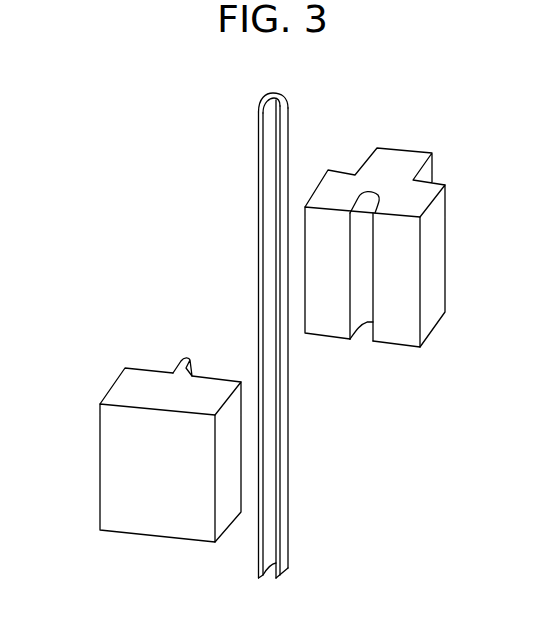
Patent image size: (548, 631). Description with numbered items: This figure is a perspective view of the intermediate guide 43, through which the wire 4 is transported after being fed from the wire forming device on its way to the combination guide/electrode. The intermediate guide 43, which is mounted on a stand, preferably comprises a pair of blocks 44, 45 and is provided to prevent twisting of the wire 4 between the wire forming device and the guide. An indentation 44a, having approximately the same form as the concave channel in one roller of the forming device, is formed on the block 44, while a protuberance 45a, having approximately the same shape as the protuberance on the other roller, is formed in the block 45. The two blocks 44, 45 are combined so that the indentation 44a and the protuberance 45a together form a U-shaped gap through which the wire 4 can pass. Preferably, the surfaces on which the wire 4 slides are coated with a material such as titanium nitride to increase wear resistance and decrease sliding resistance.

The wire 4 is at (258, 227).
The intermediate guide 43 is at (398, 123).
The block 44 is at (433, 302).
The indentation 44a is at (368, 303).
The block 45 is at (112, 482).
The protuberance 45a is at (188, 360).